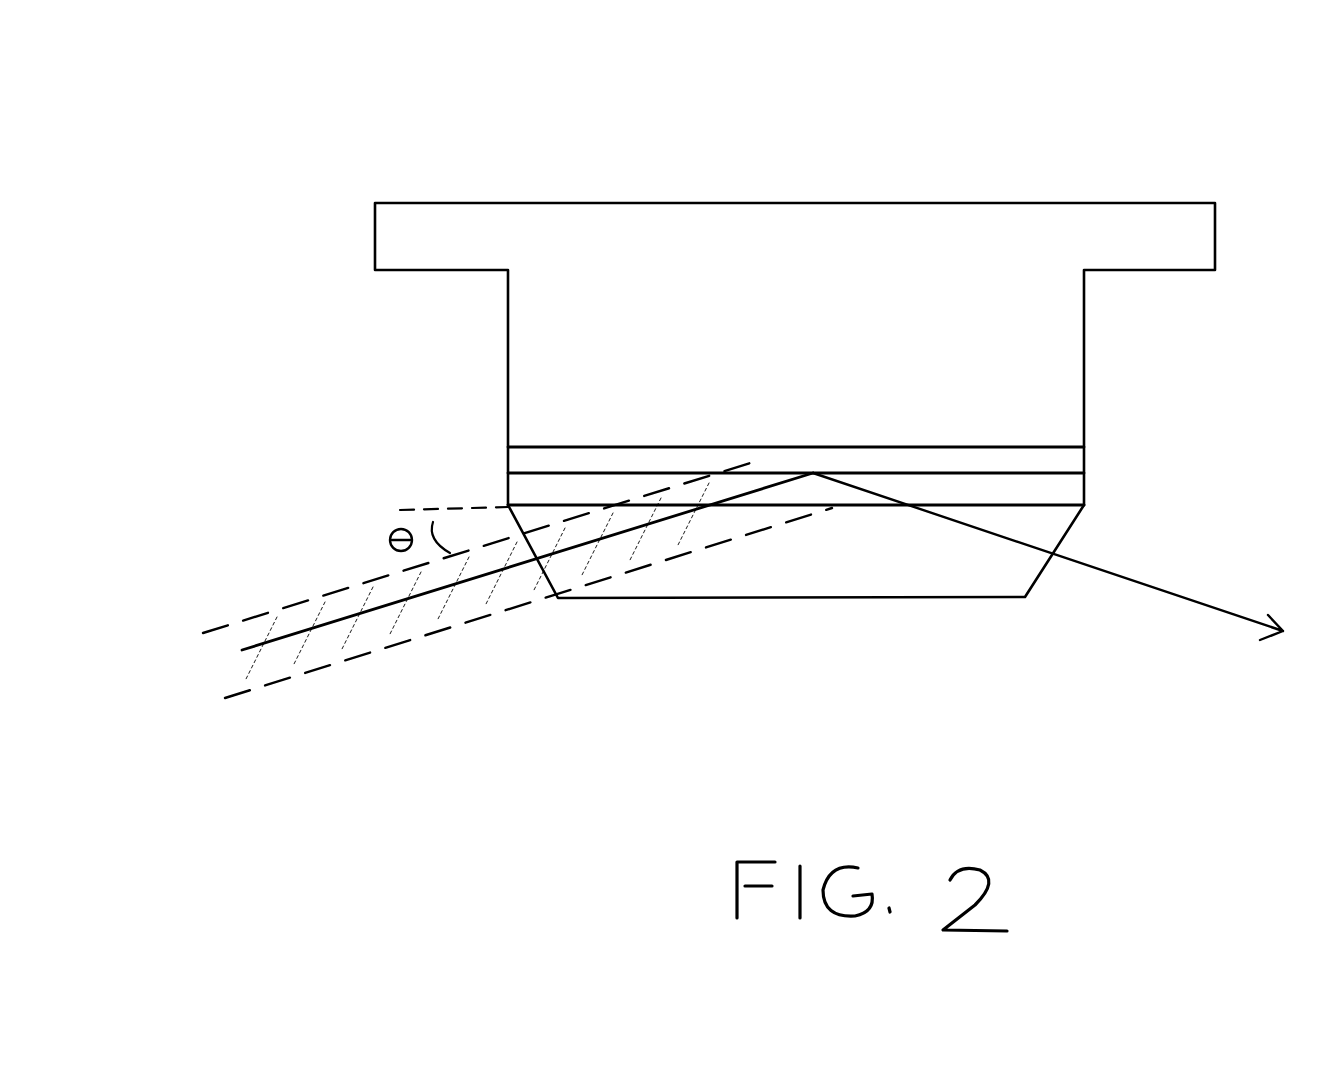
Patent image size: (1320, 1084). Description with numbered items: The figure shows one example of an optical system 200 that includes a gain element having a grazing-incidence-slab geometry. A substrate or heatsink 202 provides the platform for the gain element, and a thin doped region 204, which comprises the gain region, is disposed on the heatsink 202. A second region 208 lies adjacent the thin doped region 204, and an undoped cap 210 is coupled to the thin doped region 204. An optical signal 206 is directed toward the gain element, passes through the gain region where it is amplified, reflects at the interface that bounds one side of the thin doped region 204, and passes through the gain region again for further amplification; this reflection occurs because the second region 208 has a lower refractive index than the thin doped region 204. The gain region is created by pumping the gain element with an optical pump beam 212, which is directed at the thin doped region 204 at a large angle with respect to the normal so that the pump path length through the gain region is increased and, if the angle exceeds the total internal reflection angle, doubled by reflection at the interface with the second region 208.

The optical system 200 is at (287, 220).
The substrate or heatsink 202 is at (1047, 358).
The thin doped region 204 is at (1052, 487).
The optical signal 206 is at (310, 630).
The second region 208 is at (1067, 456).
The undoped cap 210 is at (990, 572).
The optical pump beam 212 is at (378, 597).